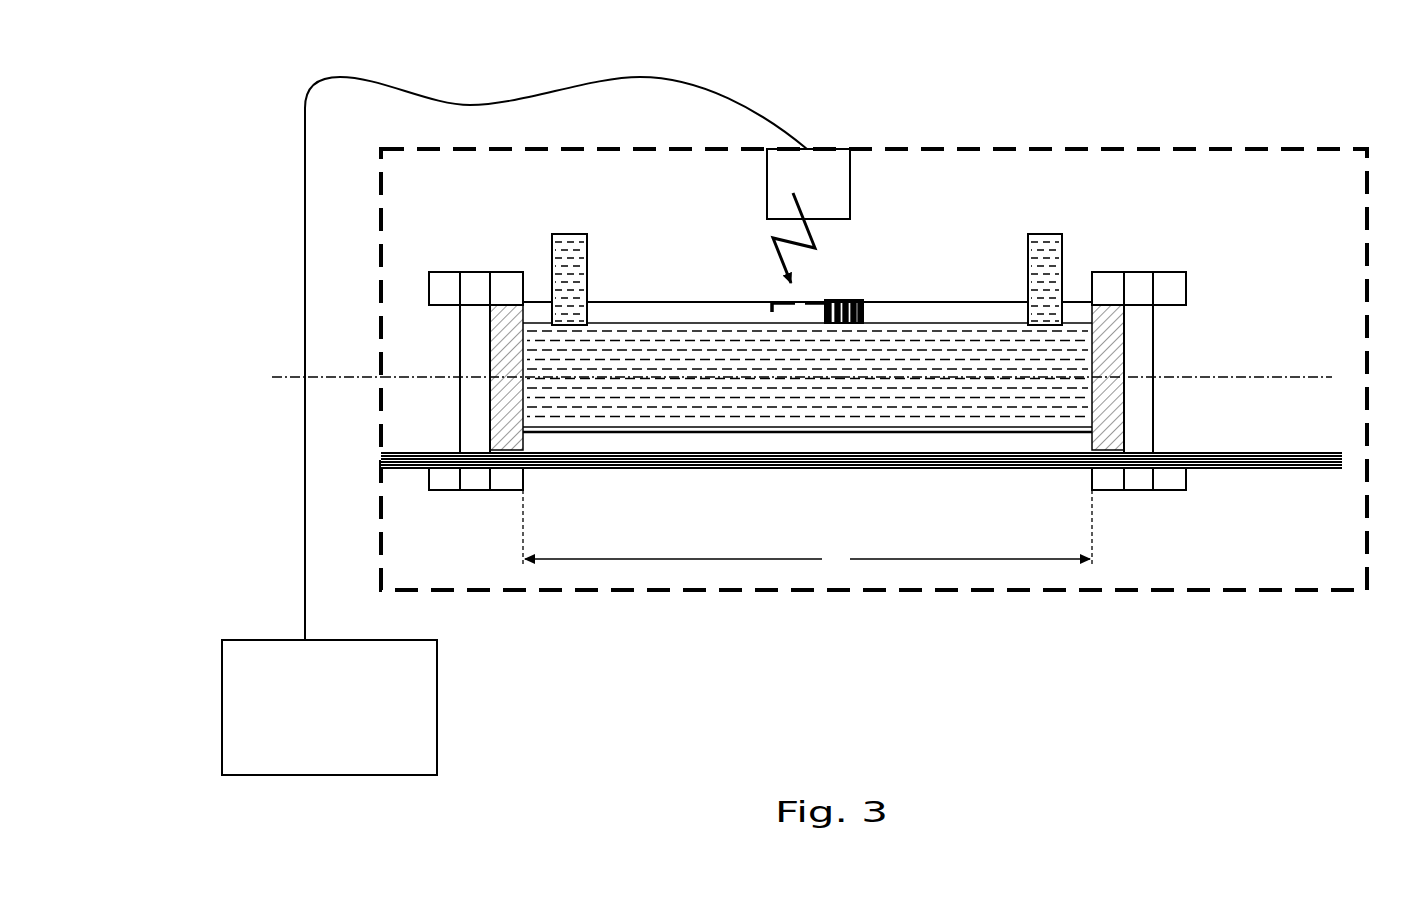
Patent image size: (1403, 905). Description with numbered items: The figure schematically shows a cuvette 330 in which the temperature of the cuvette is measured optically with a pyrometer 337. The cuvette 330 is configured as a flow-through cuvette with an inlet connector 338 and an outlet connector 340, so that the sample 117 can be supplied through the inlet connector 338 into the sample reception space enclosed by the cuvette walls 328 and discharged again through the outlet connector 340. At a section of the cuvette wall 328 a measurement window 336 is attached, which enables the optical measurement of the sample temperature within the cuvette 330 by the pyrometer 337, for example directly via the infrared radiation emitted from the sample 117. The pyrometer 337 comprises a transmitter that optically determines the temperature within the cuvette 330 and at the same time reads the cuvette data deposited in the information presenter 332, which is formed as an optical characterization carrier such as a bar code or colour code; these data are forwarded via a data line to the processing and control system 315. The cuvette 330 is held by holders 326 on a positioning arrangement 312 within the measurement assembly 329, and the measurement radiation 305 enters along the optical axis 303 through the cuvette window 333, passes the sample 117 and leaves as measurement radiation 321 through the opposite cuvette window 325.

The sample 117 is at (580, 340).
The optical axis 303 is at (338, 392).
The measurement radiation 305 is at (428, 374).
The positioning arrangement 312 is at (1278, 470).
The processing and control system 315 is at (437, 735).
The measurement radiation 321 is at (1258, 374).
The cuvette window 325 is at (1090, 398).
The holders 326 is at (505, 272).
The cuvette wall 328 is at (668, 302).
The measurement assembly 329 is at (1190, 148).
The cuvette 330 is at (1067, 516).
The information presenter 332 is at (852, 300).
The cuvette window 333 is at (524, 392).
The measurement window 336 is at (800, 302).
The pyrometer 337 is at (850, 194).
The inlet connector 338 is at (570, 234).
The outlet connector 340 is at (1048, 234).